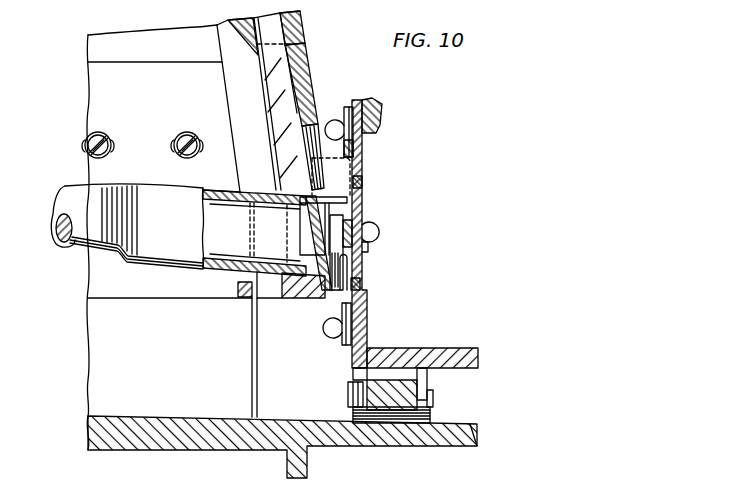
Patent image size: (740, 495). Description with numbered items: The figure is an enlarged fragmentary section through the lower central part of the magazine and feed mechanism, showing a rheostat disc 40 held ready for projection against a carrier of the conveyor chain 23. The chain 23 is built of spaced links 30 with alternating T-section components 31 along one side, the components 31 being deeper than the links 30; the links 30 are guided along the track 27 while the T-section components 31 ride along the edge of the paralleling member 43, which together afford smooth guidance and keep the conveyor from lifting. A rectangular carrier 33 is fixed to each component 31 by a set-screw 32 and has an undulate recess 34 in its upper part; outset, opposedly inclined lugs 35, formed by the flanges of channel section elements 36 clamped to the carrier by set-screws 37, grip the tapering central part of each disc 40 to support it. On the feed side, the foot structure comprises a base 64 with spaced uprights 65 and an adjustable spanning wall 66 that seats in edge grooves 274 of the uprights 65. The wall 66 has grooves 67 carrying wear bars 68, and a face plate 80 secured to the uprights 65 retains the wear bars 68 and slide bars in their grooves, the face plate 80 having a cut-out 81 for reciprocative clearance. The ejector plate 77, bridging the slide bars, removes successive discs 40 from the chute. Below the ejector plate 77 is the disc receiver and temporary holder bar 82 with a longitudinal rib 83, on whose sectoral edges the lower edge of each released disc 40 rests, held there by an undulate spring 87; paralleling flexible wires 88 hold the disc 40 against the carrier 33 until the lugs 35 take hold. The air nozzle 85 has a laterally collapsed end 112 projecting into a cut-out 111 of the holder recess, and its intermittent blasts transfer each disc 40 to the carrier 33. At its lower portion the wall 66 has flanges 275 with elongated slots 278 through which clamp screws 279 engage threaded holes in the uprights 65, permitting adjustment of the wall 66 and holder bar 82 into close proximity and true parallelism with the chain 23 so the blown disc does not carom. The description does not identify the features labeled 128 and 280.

The chain 23 is at (388, 424).
The track 27 is at (453, 444).
The links 30 is at (428, 373).
The T-section components 31 is at (360, 373).
The set-screw 32 is at (367, 333).
The carrier 33 is at (364, 160).
The undulate recess 34 is at (360, 141).
The inclined lugs 35 is at (348, 223).
The channel section elements 36 is at (366, 250).
The set-screws 37 is at (369, 235).
The rheostat disc 40 is at (311, 162).
The member 43 is at (443, 348).
The base 64 is at (128, 436).
The spaced uprights 65 is at (88, 312).
The spanning wall 66 is at (233, 117).
The grooves 67 is at (264, 80).
The wear bars 68 is at (297, 93).
The ejector plate 77 is at (300, 37).
The face plate 80 is at (309, 77).
The cut-out 81 is at (314, 134).
The holder bar 82 is at (254, 327).
The longitudinal rib 83 is at (330, 300).
The air nozzle 85 is at (202, 228).
The undulate spring 87 is at (310, 221).
The flexible wires 88 is at (333, 200).
The cut-out 111 is at (276, 357).
The collapsed nozzle end 112 is at (253, 310).
The bolt head 128 is at (376, 101).
The edge grooves 274 is at (240, 187).
The flanges 275 is at (146, 62).
The elongated slots 278 is at (173, 140).
The clamp screws 279 is at (176, 157).
The spacer 280 is at (363, 182).